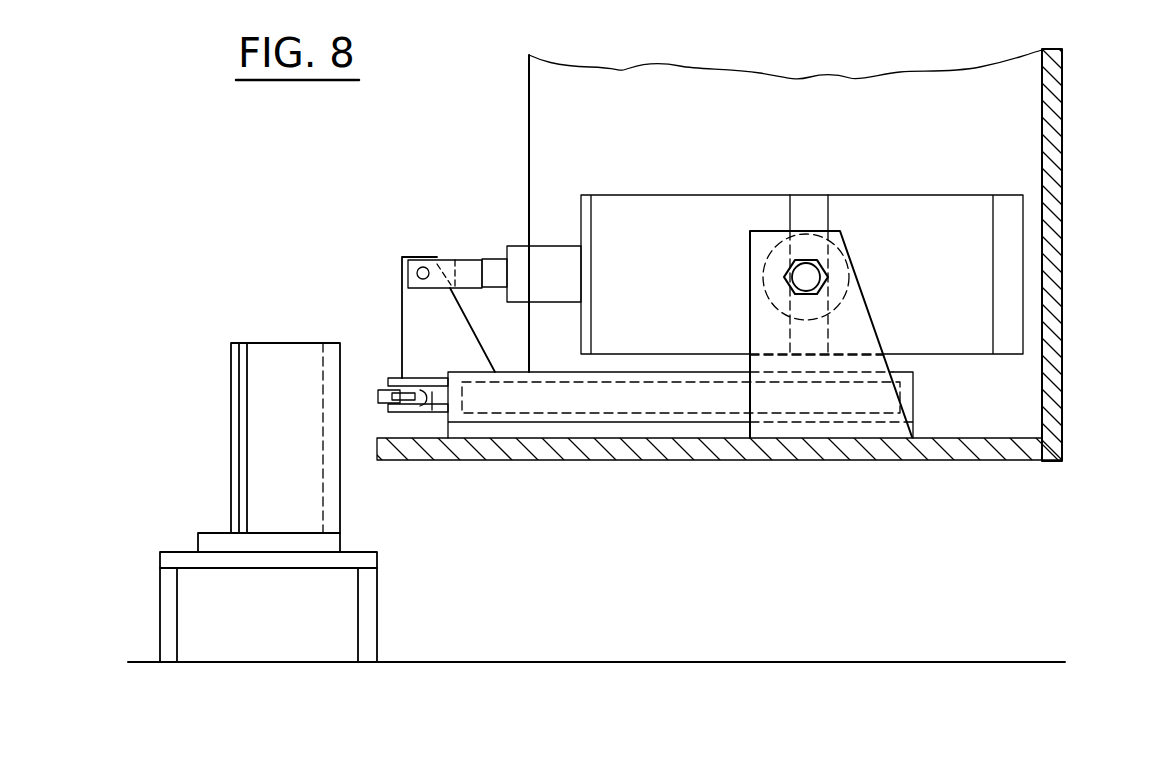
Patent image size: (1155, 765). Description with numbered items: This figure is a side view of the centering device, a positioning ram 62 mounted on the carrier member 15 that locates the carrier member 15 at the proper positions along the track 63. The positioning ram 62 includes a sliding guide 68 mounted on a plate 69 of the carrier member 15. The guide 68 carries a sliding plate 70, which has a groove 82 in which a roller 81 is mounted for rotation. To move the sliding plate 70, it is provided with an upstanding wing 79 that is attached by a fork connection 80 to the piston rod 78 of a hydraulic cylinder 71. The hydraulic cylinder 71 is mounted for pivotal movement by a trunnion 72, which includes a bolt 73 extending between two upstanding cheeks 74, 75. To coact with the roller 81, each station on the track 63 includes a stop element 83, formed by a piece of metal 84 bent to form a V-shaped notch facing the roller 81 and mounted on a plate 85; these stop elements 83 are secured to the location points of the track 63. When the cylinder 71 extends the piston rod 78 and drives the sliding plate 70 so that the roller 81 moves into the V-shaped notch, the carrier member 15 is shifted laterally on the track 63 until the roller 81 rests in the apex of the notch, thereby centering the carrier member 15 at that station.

The carrier member 15 is at (985, 122).
The positioning ram 62 is at (985, 188).
The track 63 is at (258, 608).
The sliding guide 68 is at (535, 422).
The plate 69 is at (733, 447).
The sliding plate 70 is at (438, 398).
The hydraulic cylinder 71 is at (636, 215).
The trunnion 72 is at (857, 262).
The bolt 73 is at (803, 270).
The cheek 74 is at (861, 392).
The cheek 75 is at (860, 340).
The piston rod 78 is at (498, 268).
The wing 79 is at (415, 335).
The fork connection 80 is at (470, 272).
The roller 81 is at (381, 392).
The groove 82 is at (424, 400).
The stop element 83 is at (297, 343).
The piece of metal 84 is at (263, 367).
The plate 85 is at (216, 548).